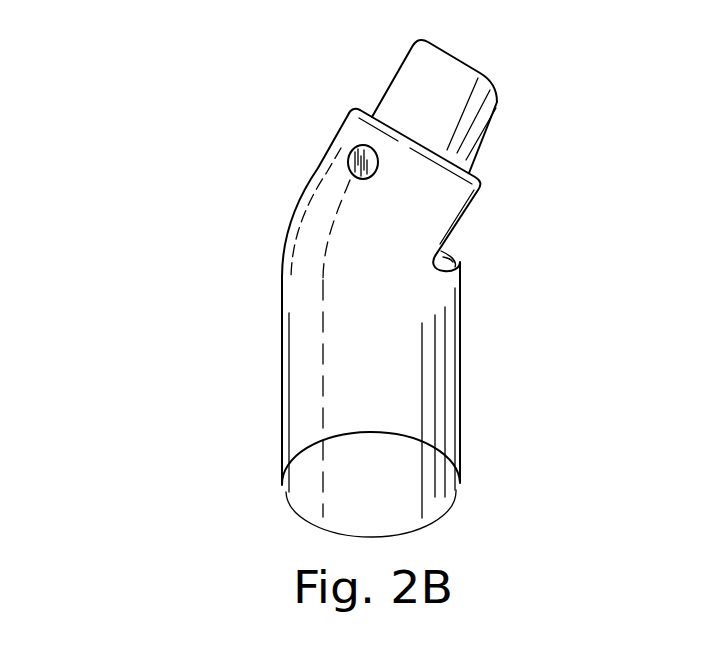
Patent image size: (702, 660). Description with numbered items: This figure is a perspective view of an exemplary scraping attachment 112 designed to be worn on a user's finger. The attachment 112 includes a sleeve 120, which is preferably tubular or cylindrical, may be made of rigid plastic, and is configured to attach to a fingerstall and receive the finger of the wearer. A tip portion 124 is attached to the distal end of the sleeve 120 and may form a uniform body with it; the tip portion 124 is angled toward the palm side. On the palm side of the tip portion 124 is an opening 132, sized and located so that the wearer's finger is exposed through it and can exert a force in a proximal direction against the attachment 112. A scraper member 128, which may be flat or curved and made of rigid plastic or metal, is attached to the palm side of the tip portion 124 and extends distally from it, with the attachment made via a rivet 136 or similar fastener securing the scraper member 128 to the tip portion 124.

The attachment 112 is at (146, 151).
The sleeve 120 is at (460, 413).
The tip portion 124 is at (290, 230).
The scraper member 128 is at (393, 73).
The opening 132 is at (472, 232).
The rivet 136 is at (350, 153).